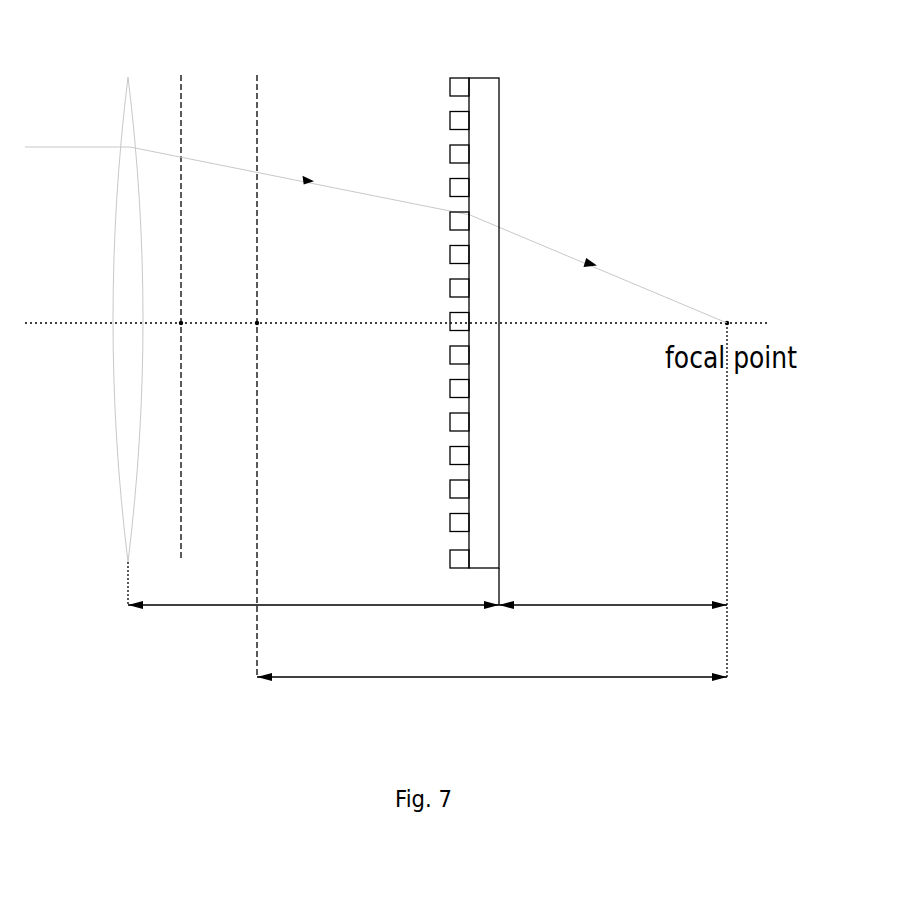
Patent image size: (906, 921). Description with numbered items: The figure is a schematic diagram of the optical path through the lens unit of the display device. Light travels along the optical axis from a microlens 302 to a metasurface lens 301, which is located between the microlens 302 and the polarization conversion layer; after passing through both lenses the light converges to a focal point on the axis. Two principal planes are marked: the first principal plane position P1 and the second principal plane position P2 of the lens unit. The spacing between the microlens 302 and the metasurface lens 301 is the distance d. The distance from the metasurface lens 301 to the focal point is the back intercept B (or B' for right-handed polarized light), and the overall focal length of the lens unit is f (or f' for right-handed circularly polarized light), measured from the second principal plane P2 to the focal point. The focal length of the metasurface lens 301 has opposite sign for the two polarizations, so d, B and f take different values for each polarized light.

The metasurface lens 301 is at (484, 76).
The microlens 302 is at (126, 130).
The first principal plane position P1 is at (200, 317).
The second principal plane position P2 is at (278, 376).
The distance between the microlens and the metasurface lens d is at (313, 588).
The back intercept B is at (613, 583).
The focal length of the lens unit f is at (492, 698).